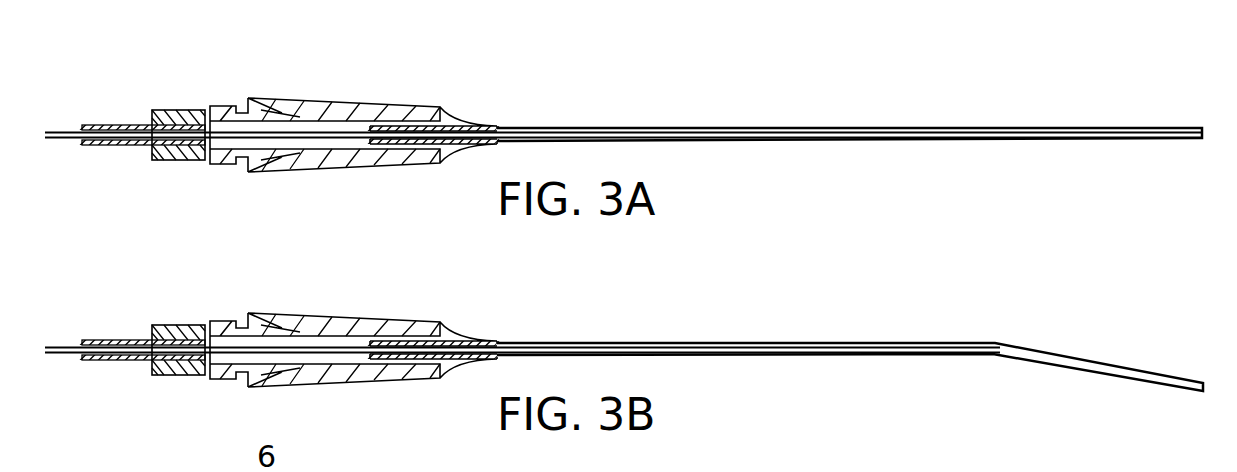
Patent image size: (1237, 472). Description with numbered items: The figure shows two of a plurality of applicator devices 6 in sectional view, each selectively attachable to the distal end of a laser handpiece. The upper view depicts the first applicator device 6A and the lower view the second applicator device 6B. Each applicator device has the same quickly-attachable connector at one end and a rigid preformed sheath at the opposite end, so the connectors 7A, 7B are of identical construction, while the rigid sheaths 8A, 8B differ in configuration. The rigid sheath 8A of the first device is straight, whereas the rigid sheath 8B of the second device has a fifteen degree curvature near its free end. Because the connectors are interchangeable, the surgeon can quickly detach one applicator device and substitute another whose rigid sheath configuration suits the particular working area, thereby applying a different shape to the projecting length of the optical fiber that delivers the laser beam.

In FIG. 3A, the applicator device 6 is at (245, 80).
In FIG. 3B, the applicator device 6 is at (243, 305).
In FIG. 3A, the applicator device 6A is at (166, 91).
In FIG. 3B, the applicator device 6B is at (131, 315).
In FIG. 3A, the quickly-attachable connector 7A is at (313, 104).
In FIG. 3B, the quickly-attachable connector 7B is at (379, 319).
In FIG. 3A, the rigid preformed sheath 8A is at (692, 127).
In FIG. 3B, the rigid preformed sheath 8B is at (692, 342).